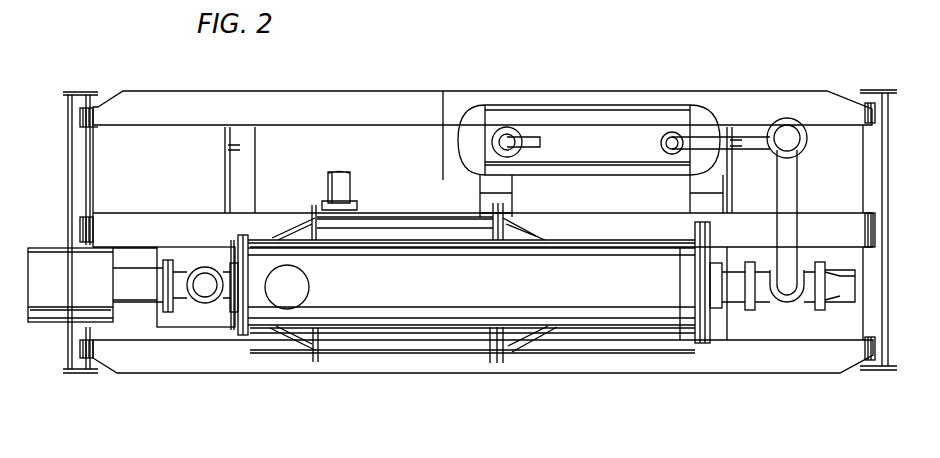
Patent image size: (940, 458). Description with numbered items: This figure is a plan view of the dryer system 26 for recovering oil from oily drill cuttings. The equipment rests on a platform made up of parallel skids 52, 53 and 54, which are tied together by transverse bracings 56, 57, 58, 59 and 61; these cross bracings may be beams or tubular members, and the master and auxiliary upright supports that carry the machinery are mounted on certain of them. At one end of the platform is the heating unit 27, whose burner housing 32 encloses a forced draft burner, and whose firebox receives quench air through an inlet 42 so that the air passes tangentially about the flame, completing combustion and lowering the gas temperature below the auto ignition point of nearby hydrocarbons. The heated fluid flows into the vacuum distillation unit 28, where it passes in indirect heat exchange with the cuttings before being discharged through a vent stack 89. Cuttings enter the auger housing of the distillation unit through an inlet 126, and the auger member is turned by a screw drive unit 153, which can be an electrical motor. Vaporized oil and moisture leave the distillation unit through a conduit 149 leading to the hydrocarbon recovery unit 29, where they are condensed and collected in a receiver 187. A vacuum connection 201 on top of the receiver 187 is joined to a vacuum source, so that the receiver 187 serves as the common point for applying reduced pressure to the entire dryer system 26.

The dryer system 26 is at (415, 48).
The vacuum outlet or connection 201 is at (527, 137).
The receiver 187 is at (628, 113).
The hydrocarbon recovery unit 29 is at (791, 102).
The skid 53 is at (828, 98).
The transverse bracing 56 is at (882, 160).
The transverse bracing 61 is at (70, 166).
The transverse bracing 59 is at (230, 155).
The burner housing 32 is at (188, 250).
The quench air inlet 42 is at (357, 215).
The transverse bracing 58 is at (480, 195).
The transverse bracing 57 is at (685, 192).
The conduit 149 is at (797, 188).
The skid 54 is at (862, 230).
The vent stack 89 is at (308, 287).
The screw drive unit 153 is at (48, 313).
The inlet 126 is at (203, 303).
The heating unit 27 is at (433, 350).
The vacuum distillation unit 28 is at (632, 320).
The skid 52 is at (820, 363).